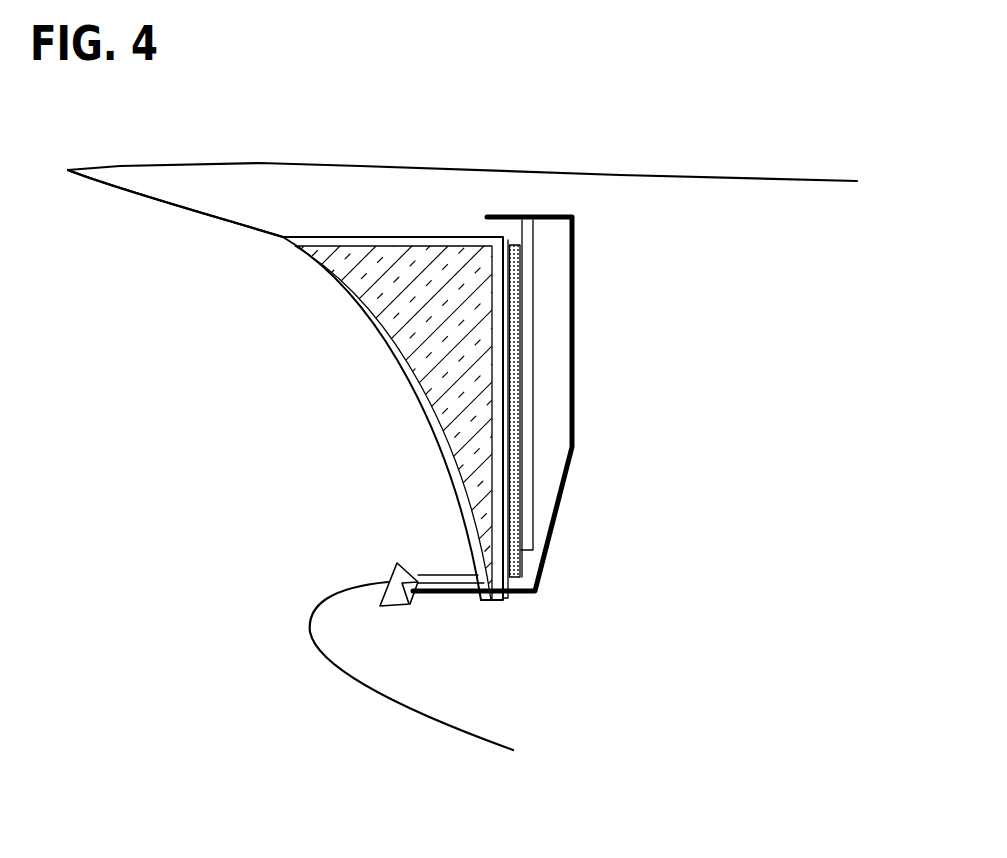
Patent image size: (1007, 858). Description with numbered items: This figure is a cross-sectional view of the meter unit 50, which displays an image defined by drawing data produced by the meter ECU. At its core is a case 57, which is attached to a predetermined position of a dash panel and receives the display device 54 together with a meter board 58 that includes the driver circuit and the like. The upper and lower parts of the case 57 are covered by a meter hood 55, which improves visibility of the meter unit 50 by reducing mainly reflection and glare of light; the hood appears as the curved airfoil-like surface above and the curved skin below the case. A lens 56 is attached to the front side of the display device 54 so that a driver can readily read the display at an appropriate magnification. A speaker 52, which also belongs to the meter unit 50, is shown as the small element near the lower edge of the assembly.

The meter unit 50 is at (464, 138).
The speaker 52 is at (388, 608).
The display device 54 is at (523, 282).
The meter hood 55 is at (185, 216).
The lens 56 is at (385, 312).
The case 57 is at (578, 339).
The meter board 58 is at (538, 488).